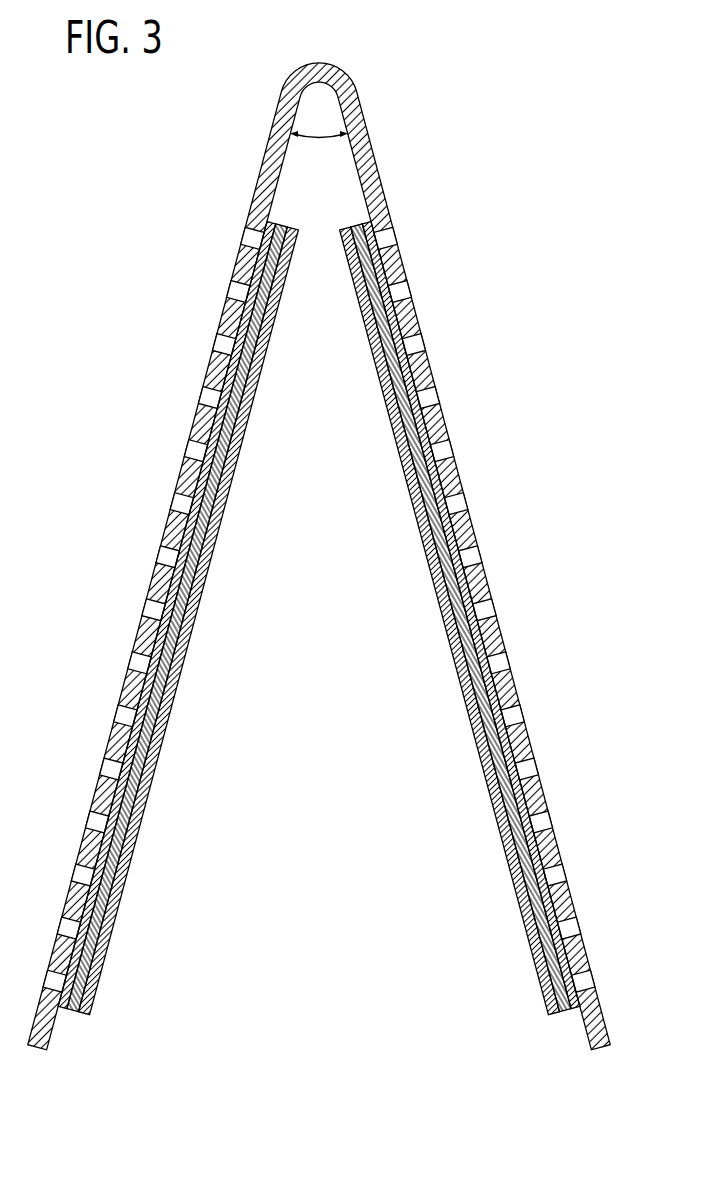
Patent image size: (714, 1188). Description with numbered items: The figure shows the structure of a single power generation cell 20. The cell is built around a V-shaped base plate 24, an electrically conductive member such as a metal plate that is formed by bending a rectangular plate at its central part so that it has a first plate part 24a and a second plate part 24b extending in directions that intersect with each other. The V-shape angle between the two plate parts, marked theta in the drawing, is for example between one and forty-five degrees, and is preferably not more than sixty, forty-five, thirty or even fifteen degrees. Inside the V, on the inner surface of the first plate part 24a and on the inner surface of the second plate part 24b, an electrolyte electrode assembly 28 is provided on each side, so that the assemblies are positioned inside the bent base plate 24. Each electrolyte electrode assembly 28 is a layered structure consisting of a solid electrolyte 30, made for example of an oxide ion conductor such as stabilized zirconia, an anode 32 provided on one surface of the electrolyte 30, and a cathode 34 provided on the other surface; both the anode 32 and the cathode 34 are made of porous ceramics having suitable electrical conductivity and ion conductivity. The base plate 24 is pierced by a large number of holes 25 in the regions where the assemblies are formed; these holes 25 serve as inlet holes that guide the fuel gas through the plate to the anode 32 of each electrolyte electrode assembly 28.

The power generation cell 20 is at (139, 126).
The base plate 24 is at (319, 556).
The first plate part 24a is at (182, 472).
The second plate part 24b is at (454, 472).
The holes 25 is at (182, 505).
The electrolyte electrode assembly 28 is at (319, 618).
The electrolyte 30 is at (134, 785).
The anode 32 is at (114, 813).
The cathode 34 is at (226, 771).